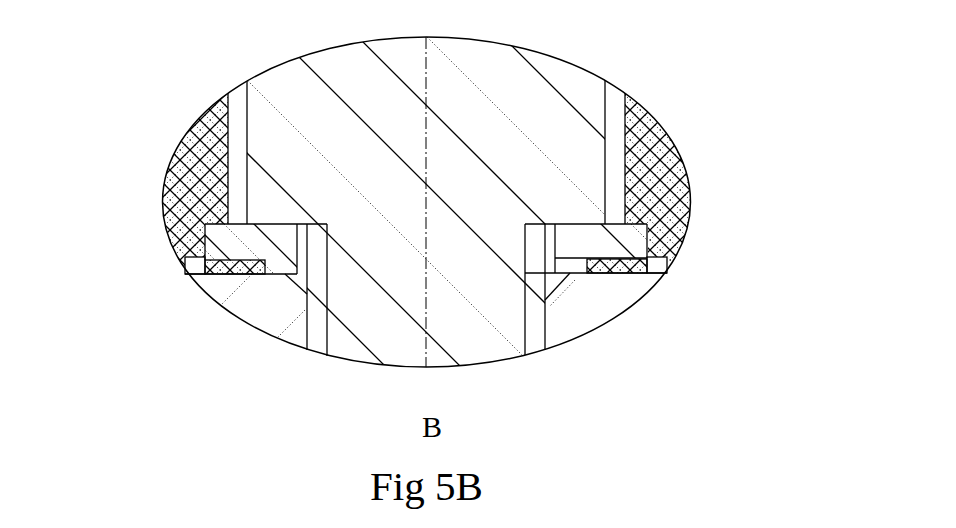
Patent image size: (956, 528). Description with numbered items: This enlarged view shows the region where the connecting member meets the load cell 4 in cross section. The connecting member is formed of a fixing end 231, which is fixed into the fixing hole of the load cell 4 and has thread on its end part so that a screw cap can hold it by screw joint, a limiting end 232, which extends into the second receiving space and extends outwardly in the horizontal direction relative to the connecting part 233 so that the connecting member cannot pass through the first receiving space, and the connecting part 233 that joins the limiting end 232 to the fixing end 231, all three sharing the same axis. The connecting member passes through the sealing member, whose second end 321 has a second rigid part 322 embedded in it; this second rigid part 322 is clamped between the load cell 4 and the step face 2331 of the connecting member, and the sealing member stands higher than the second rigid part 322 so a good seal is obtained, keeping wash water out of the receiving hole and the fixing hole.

The load cell 4 is at (597, 302).
The fixing end 231 is at (402, 340).
The limiting end 232 is at (303, 153).
The connecting part 233 is at (487, 182).
The step face 2331 is at (667, 264).
The second end 321 is at (183, 200).
The second rigid part 322 is at (195, 244).